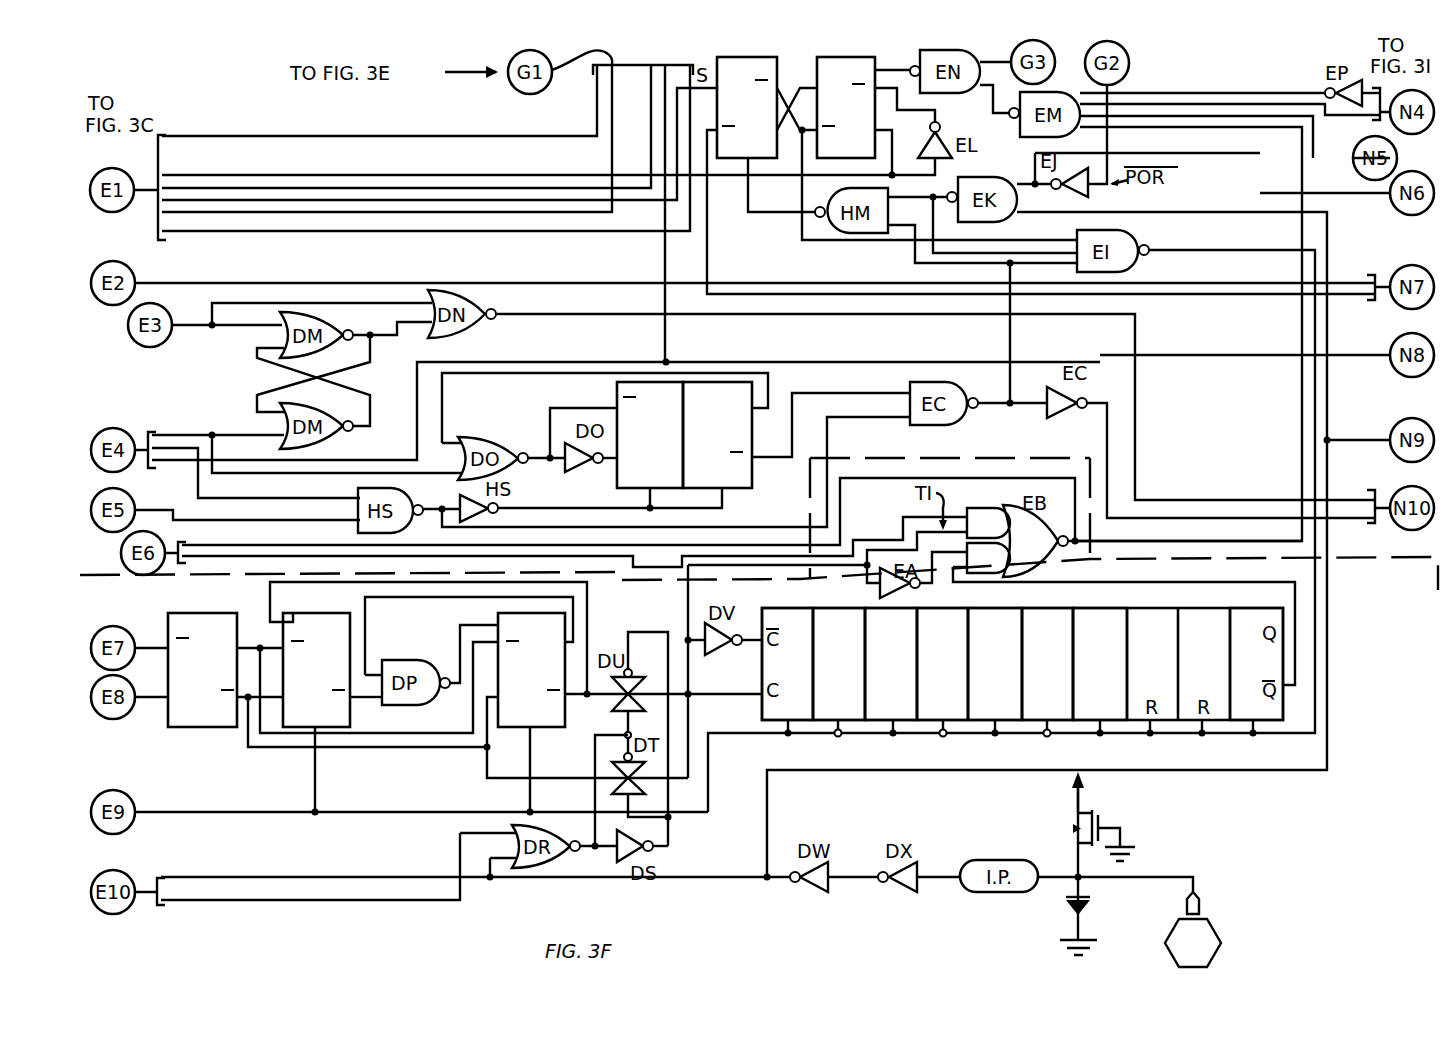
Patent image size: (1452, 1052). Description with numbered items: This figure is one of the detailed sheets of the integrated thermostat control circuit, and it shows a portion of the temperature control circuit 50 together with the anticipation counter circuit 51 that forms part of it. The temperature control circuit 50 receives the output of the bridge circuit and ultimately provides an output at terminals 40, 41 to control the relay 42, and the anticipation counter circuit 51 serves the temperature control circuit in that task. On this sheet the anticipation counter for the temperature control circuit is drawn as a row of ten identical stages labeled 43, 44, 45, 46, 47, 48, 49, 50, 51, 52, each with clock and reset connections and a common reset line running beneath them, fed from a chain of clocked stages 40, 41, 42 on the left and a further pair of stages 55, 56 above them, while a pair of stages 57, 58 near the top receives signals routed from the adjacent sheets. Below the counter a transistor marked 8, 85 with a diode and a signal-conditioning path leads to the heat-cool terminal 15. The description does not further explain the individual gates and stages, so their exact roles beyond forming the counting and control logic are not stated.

The terminal 40 is at (202, 670).
The terminal 41 is at (316, 670).
The relay 42 is at (531, 670).
The counter stage flip-flop 43 is at (787, 672).
The counter stage flip-flop 44 is at (839, 672).
The counter stage flip-flop 45 is at (891, 672).
The counter stage flip-flop 46 is at (942, 672).
The counter stage flip-flop 47 is at (995, 672).
The counter stage flip-flop 48 is at (1047, 672).
The counter stage flip-flop 49 is at (1100, 672).
The temperature control circuit 50 is at (1244, 426).
The anticipation counter circuit 51 is at (1328, 899).
The counter stage flip-flop 52 is at (1256, 672).
The flip-flop 55 is at (650, 435).
The flip-flop 56 is at (717, 435).
The flip-flop 57 is at (747, 107).
The flip-flop 58 is at (846, 107).
The transistor 8 is at (1060, 831).
The transistor 85 is at (1060, 831).
The heat/cool terminal connector 15 is at (1214, 929).